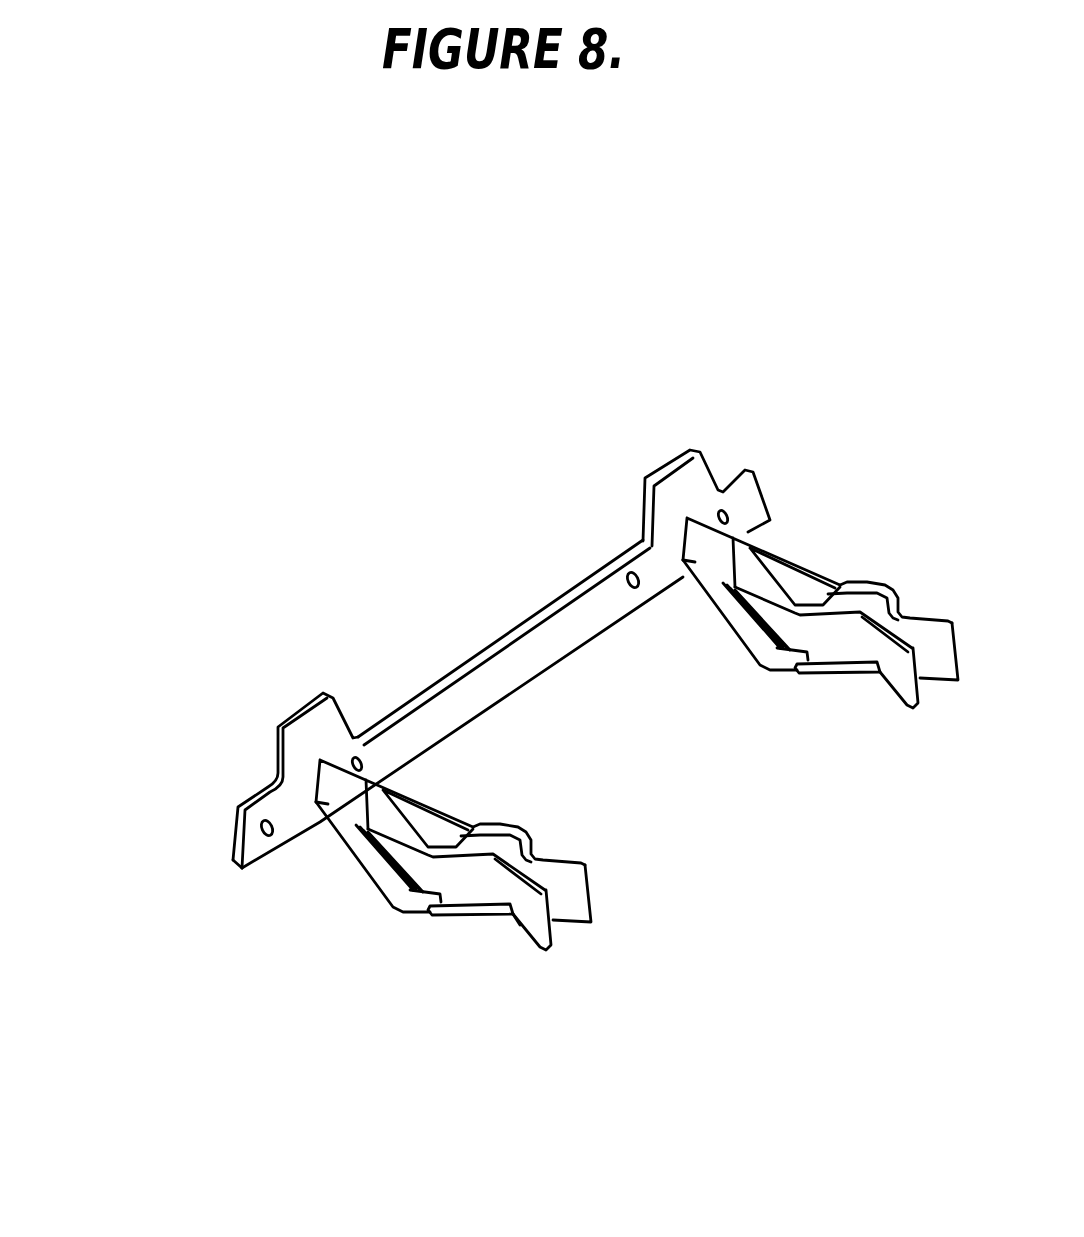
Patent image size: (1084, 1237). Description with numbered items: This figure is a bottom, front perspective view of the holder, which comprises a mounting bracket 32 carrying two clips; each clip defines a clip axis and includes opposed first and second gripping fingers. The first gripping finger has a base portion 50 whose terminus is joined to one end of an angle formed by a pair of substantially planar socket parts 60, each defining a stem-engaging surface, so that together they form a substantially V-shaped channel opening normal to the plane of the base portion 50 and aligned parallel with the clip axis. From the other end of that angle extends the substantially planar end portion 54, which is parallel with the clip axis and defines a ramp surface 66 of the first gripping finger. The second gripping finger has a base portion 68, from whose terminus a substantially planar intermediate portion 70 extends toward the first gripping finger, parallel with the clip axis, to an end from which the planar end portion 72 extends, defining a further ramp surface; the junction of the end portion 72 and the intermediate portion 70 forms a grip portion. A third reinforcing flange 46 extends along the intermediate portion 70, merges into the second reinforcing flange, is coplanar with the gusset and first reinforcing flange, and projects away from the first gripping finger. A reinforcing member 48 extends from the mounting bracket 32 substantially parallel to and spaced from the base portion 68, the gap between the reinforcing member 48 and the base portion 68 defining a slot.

The mounting bracket 32 is at (568, 630).
The base portion 50 is at (432, 812).
The socket parts 60 is at (503, 823).
The end portion 54 is at (563, 865).
The ramp surface 66 is at (560, 900).
The intermediate portion 70 is at (458, 875).
The end portion 72 is at (526, 913).
The third reinforcing flange 46 is at (467, 913).
The reinforcing member 48 is at (367, 866).
The base portion 68 is at (397, 845).